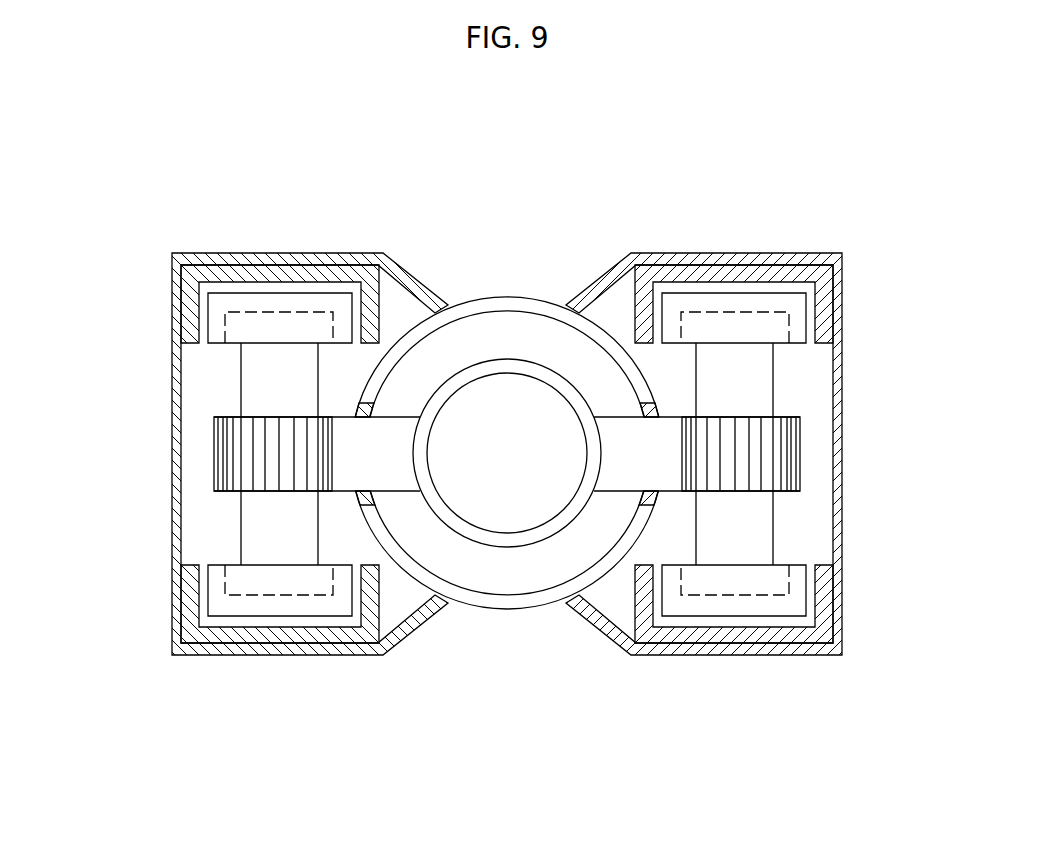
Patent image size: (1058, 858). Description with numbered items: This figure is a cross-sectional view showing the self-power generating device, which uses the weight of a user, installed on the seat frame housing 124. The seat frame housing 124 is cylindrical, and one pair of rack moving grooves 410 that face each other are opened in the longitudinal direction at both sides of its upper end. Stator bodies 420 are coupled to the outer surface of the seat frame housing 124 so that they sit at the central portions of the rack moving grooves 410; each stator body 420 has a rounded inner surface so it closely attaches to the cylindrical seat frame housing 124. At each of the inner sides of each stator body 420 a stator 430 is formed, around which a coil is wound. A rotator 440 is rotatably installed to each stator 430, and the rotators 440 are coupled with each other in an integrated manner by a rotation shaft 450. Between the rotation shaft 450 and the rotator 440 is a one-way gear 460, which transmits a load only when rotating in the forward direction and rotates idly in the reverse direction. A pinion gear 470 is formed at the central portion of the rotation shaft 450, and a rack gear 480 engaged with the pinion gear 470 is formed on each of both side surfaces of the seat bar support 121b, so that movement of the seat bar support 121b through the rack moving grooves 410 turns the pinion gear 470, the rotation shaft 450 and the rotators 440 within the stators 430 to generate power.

The seat bar support 121b is at (511, 376).
The seat frame housing 124 is at (500, 607).
The rack moving groove 410 is at (360, 500).
The stator body 420 is at (318, 648).
The stator 430 is at (212, 645).
The rotator 440 is at (278, 612).
The rotation shaft 450 is at (253, 525).
The one-way gear 460 is at (250, 594).
The pinion gear 470 is at (238, 450).
The rack gear 480 is at (357, 430).